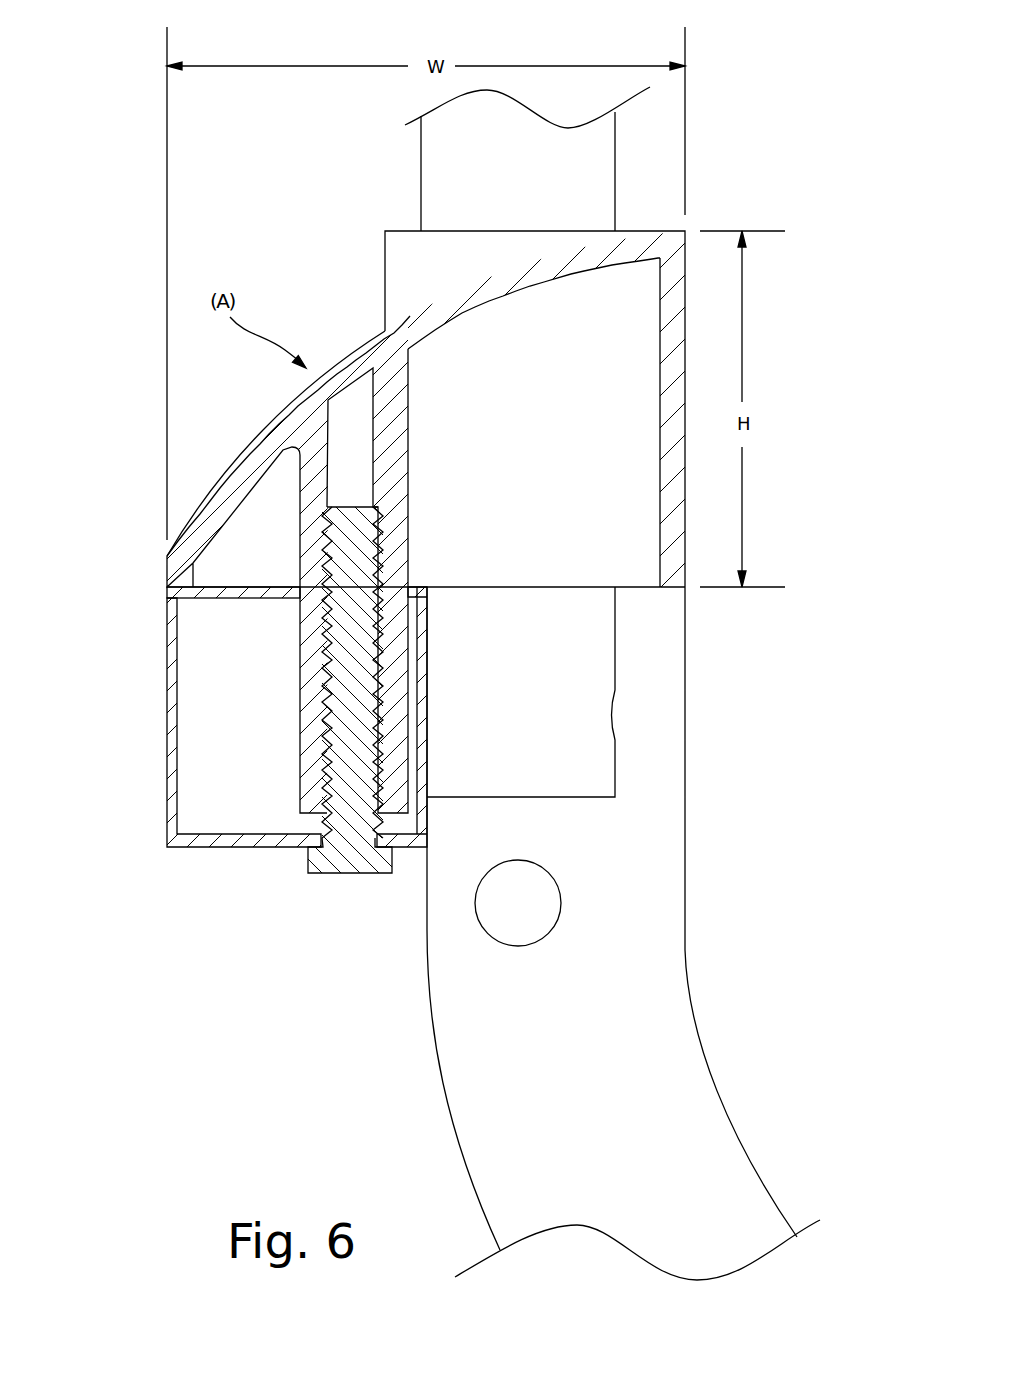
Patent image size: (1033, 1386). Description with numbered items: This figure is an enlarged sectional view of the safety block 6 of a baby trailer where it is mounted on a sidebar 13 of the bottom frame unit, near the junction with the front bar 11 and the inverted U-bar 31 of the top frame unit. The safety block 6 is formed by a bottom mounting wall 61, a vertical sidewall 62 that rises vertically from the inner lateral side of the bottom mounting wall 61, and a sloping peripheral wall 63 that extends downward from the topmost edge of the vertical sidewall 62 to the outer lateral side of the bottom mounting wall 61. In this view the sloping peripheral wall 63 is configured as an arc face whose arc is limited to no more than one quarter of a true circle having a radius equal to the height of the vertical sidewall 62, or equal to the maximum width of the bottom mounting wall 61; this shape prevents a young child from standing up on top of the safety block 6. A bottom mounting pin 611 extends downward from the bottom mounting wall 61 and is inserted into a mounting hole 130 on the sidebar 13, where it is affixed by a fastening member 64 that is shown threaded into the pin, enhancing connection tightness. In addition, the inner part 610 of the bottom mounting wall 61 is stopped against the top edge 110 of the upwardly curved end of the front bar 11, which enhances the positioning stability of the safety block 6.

The safety block 6 is at (305, 295).
The front bar 11 is at (707, 1067).
The sidebar 13 is at (170, 778).
The inverted U-bar 31 is at (613, 153).
The bottom mounting wall 61 is at (256, 577).
The vertical sidewall 62 is at (686, 353).
The sloping peripheral wall 63 is at (263, 428).
The fastening member 64 is at (345, 874).
The top edge 110 is at (627, 587).
The mounting hole 130 is at (297, 592).
The inner part 610 is at (651, 588).
The bottom mounting pin 611 is at (300, 708).